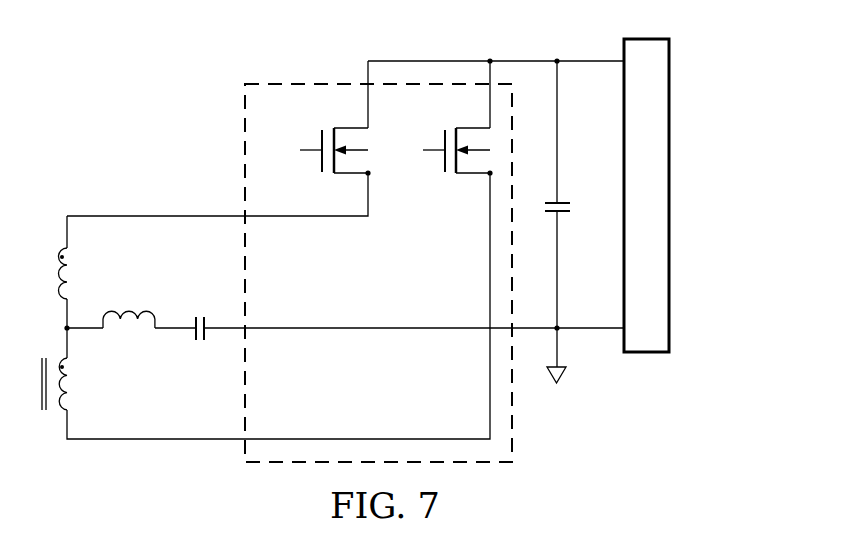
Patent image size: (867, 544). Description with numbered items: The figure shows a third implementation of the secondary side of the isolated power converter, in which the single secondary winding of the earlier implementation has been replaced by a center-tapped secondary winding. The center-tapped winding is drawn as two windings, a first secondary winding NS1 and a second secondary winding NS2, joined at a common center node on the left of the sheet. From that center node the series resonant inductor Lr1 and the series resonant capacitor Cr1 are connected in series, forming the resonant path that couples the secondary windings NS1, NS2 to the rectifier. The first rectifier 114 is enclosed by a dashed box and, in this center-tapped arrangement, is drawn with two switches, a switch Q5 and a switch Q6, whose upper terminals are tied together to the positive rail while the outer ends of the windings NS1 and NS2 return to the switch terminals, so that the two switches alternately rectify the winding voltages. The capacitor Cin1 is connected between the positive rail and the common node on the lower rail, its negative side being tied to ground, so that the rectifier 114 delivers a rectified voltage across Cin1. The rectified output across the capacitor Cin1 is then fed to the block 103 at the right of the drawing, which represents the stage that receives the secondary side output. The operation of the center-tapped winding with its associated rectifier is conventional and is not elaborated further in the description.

The first rectifier 114 is at (325, 85).
The DC bus / input source block 103 is at (669, 193).
The switch Q5 is at (317, 150).
The switch Q6 is at (439, 150).
The capacitor Cin1 is at (579, 222).
The series resonant inductor Lr1 is at (129, 308).
The series resonant capacitor Cr1 is at (201, 320).
The first secondary winding NS1 is at (71, 384).
The second secondary winding NS2 is at (80, 273).